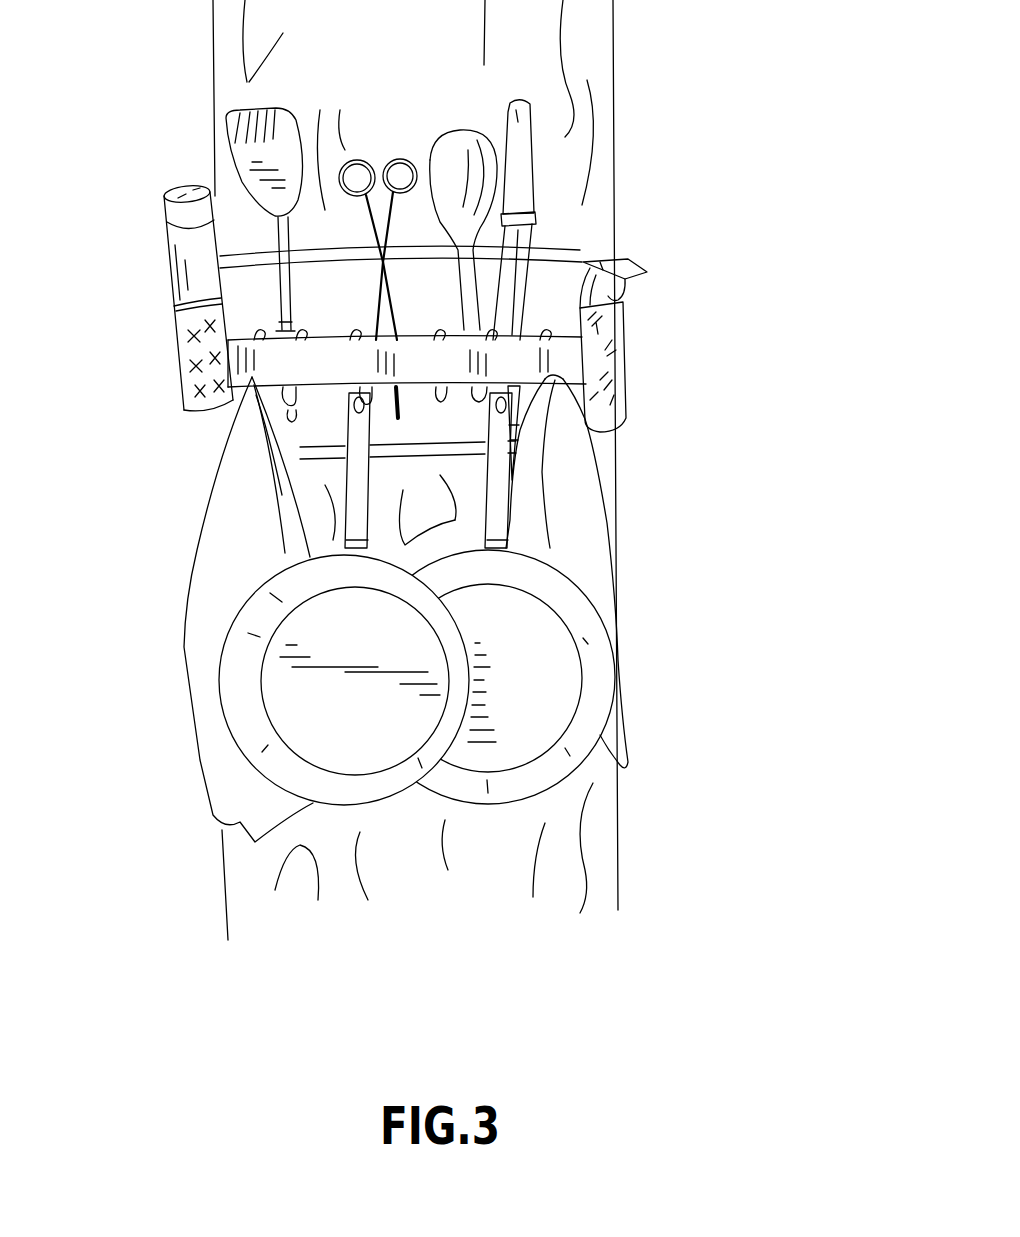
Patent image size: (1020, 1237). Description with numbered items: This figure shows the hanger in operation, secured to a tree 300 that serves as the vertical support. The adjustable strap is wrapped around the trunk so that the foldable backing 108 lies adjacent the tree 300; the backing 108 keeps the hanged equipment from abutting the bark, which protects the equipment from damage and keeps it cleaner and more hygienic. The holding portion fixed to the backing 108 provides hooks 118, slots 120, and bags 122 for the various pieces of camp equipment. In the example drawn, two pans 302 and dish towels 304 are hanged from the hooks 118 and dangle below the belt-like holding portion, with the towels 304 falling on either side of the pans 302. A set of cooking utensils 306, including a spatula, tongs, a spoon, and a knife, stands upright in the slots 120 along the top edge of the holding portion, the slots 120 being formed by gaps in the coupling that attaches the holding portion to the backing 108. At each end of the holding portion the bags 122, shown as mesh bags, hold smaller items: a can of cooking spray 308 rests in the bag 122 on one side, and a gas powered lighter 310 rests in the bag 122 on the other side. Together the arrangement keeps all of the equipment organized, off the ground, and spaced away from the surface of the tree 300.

The tree 300 is at (608, 855).
The foldable backing 108 is at (573, 260).
The gas powered lighter 310 is at (628, 297).
The bags 122 is at (627, 355).
The cooking spray 308 is at (173, 214).
The slots 120 is at (337, 378).
The hooks 118 is at (356, 343).
The cooking utensils 306 is at (510, 106).
The dish towels 304 is at (260, 822).
The pans 302 is at (477, 793).